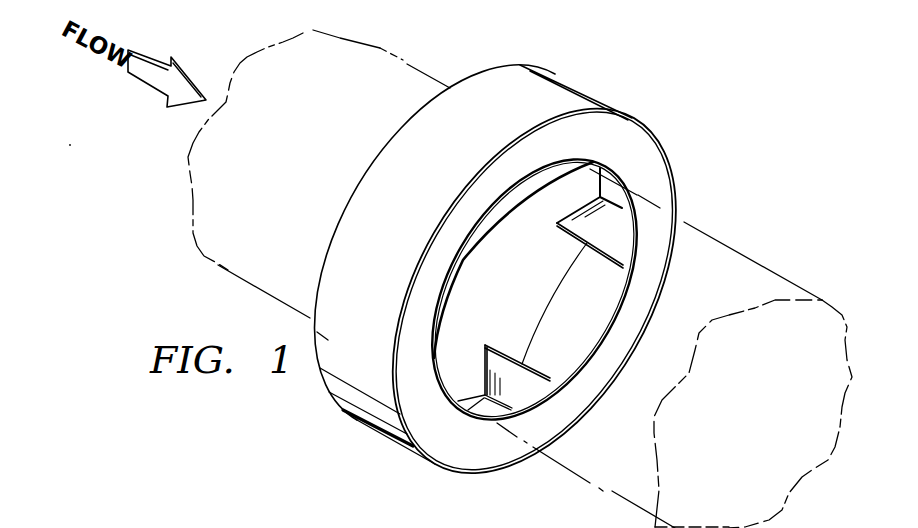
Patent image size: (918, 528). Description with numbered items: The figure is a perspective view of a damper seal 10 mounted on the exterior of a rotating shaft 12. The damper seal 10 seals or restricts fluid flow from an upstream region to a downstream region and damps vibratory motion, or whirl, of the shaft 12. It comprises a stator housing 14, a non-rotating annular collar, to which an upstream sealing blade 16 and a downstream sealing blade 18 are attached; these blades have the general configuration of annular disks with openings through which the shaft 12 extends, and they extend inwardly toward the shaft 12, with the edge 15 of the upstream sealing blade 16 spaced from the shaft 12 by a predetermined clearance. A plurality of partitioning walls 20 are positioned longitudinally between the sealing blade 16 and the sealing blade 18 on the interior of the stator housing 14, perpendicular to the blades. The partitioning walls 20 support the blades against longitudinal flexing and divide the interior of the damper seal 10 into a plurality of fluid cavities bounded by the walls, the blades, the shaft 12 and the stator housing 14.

The damper seal 10 is at (397, 107).
The shaft 12 is at (732, 262).
The stator housing 14 is at (582, 91).
The edge 15 is at (497, 328).
The upstream sealing blade 16 is at (523, 322).
The downstream sealing blade 18 is at (638, 152).
The partitioning walls 20 is at (612, 241).